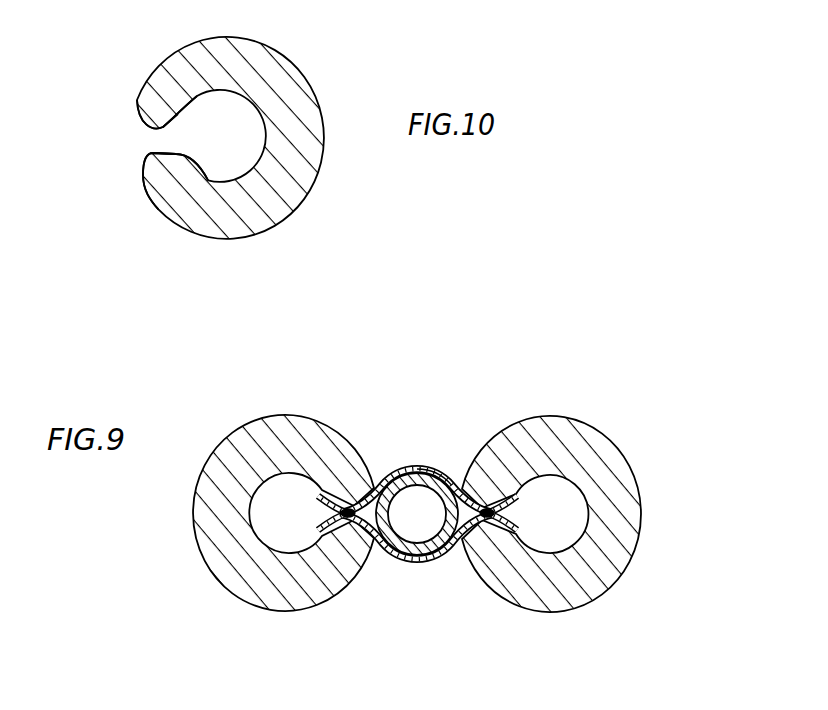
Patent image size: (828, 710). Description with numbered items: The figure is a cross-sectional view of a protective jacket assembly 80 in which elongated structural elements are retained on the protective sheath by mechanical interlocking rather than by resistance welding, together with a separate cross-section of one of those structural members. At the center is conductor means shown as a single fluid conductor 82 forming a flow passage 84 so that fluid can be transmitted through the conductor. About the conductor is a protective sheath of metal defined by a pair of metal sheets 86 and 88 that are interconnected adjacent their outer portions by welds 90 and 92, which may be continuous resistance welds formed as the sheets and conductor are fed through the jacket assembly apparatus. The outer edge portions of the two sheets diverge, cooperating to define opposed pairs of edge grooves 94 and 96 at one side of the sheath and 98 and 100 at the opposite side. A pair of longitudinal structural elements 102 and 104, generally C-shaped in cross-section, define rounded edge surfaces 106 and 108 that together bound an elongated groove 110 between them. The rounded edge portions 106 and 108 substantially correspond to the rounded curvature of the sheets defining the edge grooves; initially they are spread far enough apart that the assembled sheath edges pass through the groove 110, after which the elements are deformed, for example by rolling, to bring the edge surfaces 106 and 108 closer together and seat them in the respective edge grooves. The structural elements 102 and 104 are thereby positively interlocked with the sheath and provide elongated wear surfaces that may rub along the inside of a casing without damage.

In FIG. 9, the tubing assembly 80 is at (409, 473).
In FIG. 9, the fluid conductor 82 is at (425, 556).
In FIG. 9, the flow passage 84 is at (407, 466).
In FIG. 9, the metal sheet 86 is at (426, 466).
In FIG. 9, the metal sheet 88 is at (402, 563).
In FIG. 9, the weld 90 is at (348, 508).
In FIG. 9, the weld 92 is at (489, 507).
In FIG. 9, the edge groove 94 is at (335, 497).
In FIG. 9, the edge groove 96 is at (336, 537).
In FIG. 9, the edge groove 98 is at (508, 493).
In FIG. 9, the edge groove 100 is at (502, 532).
In FIG. 9, the longitudinal structural element 102 is at (204, 531).
In FIG. 10, the longitudinal structural element 104 is at (305, 102).
In FIG. 9, the longitudinal structural element 104 is at (624, 524).
In FIG. 10, the edge surface 106 is at (140, 118).
In FIG. 10, the edge surface 108 is at (150, 154).
In FIG. 10, the elongated groove 110 is at (173, 138).